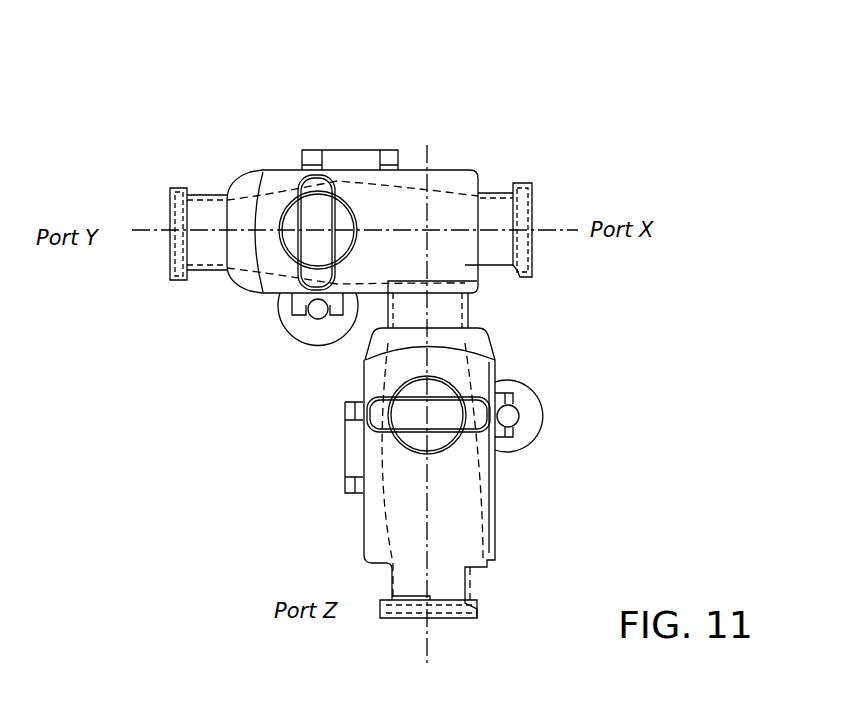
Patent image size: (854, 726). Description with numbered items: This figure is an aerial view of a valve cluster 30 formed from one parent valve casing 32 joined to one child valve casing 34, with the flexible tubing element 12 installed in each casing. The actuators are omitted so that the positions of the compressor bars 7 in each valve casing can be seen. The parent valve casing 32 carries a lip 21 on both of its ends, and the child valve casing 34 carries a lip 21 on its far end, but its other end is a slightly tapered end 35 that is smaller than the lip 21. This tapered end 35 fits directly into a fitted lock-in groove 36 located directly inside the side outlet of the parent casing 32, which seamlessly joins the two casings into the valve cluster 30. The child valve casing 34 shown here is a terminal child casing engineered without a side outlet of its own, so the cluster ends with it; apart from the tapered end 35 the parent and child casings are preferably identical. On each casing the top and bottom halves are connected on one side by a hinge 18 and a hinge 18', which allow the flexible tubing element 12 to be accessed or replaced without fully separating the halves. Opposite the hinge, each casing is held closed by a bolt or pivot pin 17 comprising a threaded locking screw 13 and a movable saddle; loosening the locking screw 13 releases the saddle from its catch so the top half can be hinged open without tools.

The valve cluster 30 is at (678, 184).
The flexible tubing element 12 is at (500, 207).
The parent valve casing 32 is at (440, 180).
The child valve casing 34 is at (472, 476).
The lip 21 is at (183, 188).
The tapered end 35 is at (478, 284).
The lock-in groove 36 is at (470, 300).
The compressor bar 7 is at (310, 270).
The locking screw 13 is at (313, 333).
The pivot pin 17 is at (333, 313).
The hinge 18 is at (300, 447).
The hinge 18' is at (350, 123).